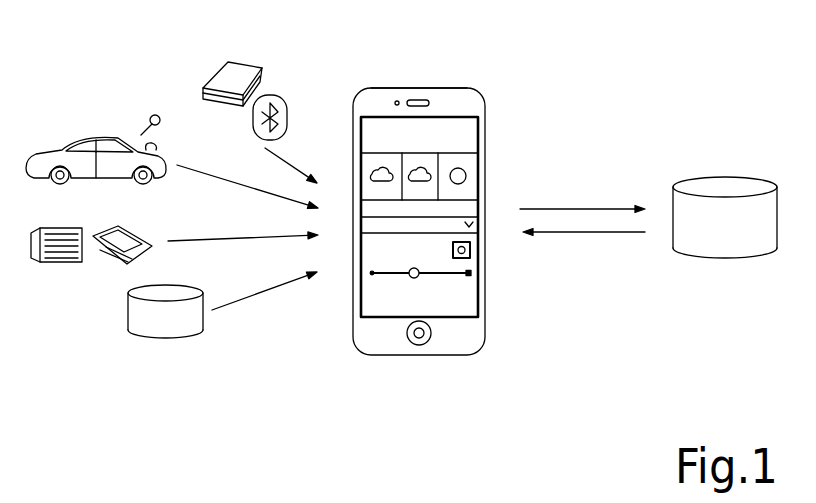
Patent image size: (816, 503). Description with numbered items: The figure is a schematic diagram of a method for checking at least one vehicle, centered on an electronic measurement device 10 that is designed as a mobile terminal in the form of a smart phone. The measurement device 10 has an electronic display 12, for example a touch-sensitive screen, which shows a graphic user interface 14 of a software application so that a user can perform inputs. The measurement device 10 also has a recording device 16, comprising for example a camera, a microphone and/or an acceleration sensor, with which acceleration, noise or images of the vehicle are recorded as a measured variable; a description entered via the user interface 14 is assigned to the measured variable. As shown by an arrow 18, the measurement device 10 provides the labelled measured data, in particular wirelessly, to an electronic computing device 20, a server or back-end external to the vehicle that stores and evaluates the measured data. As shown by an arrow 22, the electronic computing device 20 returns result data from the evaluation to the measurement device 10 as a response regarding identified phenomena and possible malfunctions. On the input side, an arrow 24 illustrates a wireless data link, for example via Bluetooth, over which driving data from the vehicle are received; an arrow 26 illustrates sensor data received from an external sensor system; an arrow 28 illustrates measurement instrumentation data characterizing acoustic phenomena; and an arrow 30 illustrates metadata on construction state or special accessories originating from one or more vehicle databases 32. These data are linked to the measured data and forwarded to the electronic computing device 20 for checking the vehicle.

The electronic measurement device 10 is at (494, 75).
The electronic display 12 is at (492, 128).
The graphic user interface 14 is at (399, 78).
The recording device 16 is at (385, 373).
The arrow 18 is at (570, 209).
The electronic computing device 20 is at (718, 188).
The arrow 22 is at (595, 232).
The arrow 24 is at (293, 170).
The arrow 26 is at (193, 173).
The arrow 28 is at (183, 240).
The arrow 30 is at (272, 290).
The vehicle database 32 is at (165, 328).